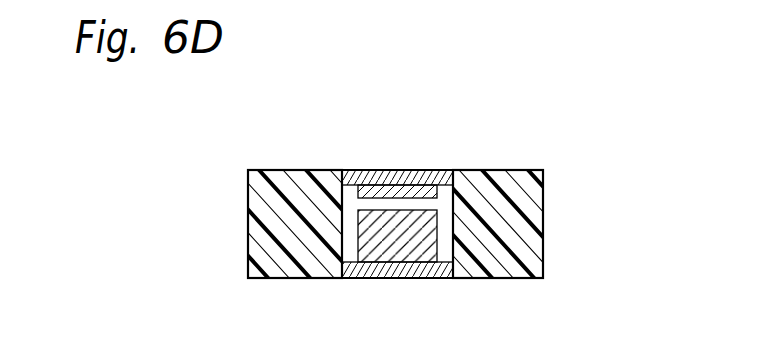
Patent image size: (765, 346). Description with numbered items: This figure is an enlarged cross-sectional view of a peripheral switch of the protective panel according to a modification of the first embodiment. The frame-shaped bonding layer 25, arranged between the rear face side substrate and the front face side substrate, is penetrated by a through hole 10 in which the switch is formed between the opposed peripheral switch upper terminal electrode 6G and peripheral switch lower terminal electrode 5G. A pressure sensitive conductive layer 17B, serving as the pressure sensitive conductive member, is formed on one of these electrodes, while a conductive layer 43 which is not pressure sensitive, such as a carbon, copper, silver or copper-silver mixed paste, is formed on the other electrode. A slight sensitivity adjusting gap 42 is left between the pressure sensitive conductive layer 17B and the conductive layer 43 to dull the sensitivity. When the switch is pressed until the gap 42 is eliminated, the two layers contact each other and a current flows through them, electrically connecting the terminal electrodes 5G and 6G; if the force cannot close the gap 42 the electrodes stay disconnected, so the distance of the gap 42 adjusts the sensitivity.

The bonding layer 25 is at (295, 170).
The through hole 10 is at (455, 227).
The pressure sensitive conductive layer 17B is at (376, 182).
The peripheral switch upper terminal electrode 6G is at (402, 170).
The peripheral switch lower terminal electrode 5G is at (400, 278).
The gap 42 is at (422, 203).
The conductive layer 43 is at (377, 235).